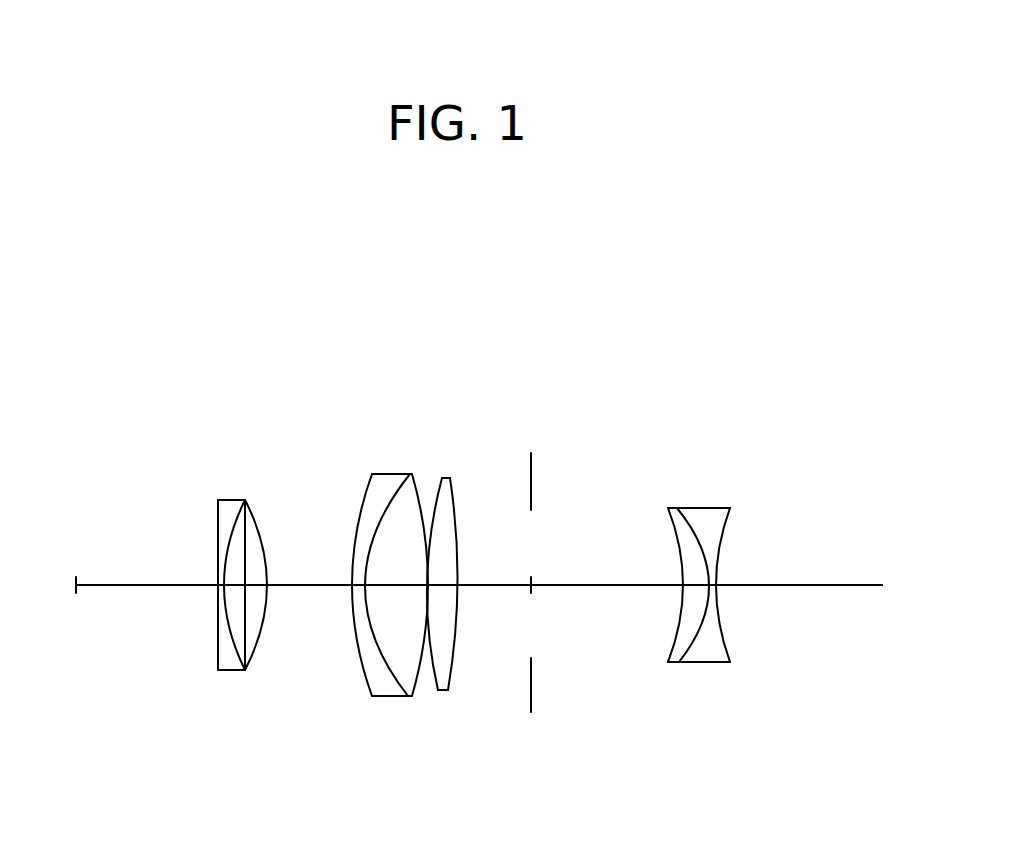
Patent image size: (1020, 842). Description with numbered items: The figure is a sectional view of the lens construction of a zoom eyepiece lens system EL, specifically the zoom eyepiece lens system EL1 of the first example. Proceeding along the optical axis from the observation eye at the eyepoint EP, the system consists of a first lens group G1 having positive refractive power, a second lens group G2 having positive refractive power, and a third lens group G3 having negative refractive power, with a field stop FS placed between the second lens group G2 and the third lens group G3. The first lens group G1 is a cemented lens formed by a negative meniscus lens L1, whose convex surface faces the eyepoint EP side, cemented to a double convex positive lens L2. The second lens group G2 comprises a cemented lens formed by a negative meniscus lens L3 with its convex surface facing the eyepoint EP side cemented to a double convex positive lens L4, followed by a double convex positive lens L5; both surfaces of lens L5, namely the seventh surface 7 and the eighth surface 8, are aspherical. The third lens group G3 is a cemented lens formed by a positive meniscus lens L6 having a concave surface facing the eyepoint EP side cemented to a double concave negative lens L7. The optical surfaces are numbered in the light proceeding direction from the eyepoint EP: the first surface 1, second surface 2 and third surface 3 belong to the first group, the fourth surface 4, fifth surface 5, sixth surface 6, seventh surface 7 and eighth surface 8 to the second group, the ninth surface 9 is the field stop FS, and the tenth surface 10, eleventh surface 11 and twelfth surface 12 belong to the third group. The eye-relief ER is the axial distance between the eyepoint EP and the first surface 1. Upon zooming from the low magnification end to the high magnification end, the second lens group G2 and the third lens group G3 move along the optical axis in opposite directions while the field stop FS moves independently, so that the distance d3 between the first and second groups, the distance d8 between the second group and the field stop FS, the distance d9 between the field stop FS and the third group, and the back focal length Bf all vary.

The zoom eyepiece lens system EL is at (469, 527).
The zoom eyepiece lens system EL1 is at (609, 349).
The eyepoint EP is at (76, 577).
The eye-relief ER is at (146, 585).
The distance between first and second lens groups d3 is at (302, 585).
The distance between second lens group and field stop d8 is at (497, 585).
The distance between field stop and third lens group d9 is at (604, 585).
The back focal length Bf is at (808, 585).
The field stop FS is at (531, 453).
The first lens group G1 is at (212, 760).
The second lens group G2 is at (468, 760).
The third lens group G3 is at (765, 760).
The negative meniscus lens L1 is at (224, 500).
The double convex positive lens L2 is at (243, 500).
The negative meniscus lens L3 is at (383, 474).
The double convex positive lens L4 is at (412, 474).
The double convex positive lens L5 is at (447, 478).
The positive meniscus lens L6 is at (670, 508).
The double concave negative lens L7 is at (711, 508).
The first surface 1 is at (218, 655).
The second surface 2 is at (240, 658).
The third surface 3 is at (252, 660).
The fourth surface 4 is at (368, 681).
The fifth surface 5 is at (397, 680).
The sixth surface 6 is at (416, 681).
The seventh surface 7 is at (438, 685).
The eighth surface 8 is at (455, 680).
The ninth surface 9 is at (531, 697).
The tenth surface 10 is at (670, 648).
The eleventh surface 11 is at (681, 650).
The twelfth surface 12 is at (727, 648).